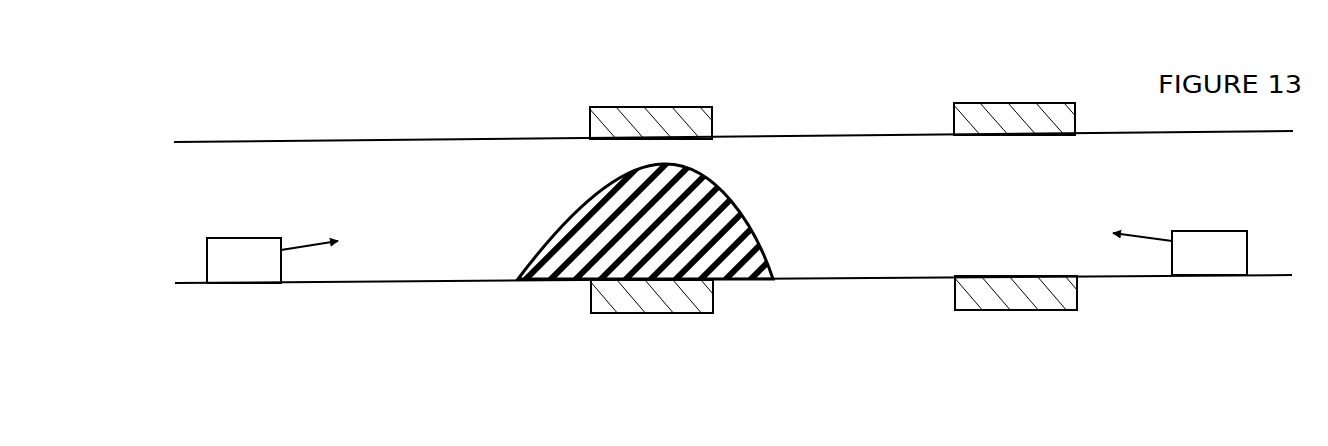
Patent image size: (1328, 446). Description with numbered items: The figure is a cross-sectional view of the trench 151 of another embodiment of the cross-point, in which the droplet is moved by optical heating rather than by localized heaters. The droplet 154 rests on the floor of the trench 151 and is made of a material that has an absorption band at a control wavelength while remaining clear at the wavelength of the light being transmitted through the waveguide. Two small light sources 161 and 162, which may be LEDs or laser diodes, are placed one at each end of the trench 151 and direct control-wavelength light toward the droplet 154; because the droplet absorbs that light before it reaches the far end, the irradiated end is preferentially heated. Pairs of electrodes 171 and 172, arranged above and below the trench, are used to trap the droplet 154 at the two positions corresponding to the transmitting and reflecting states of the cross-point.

The trench 151 is at (1276, 248).
The droplet 154 is at (712, 212).
The light source 161 is at (235, 273).
The light source 162 is at (1200, 263).
The pair of electrodes 171 is at (648, 107).
The pair of electrodes 172 is at (1003, 107).